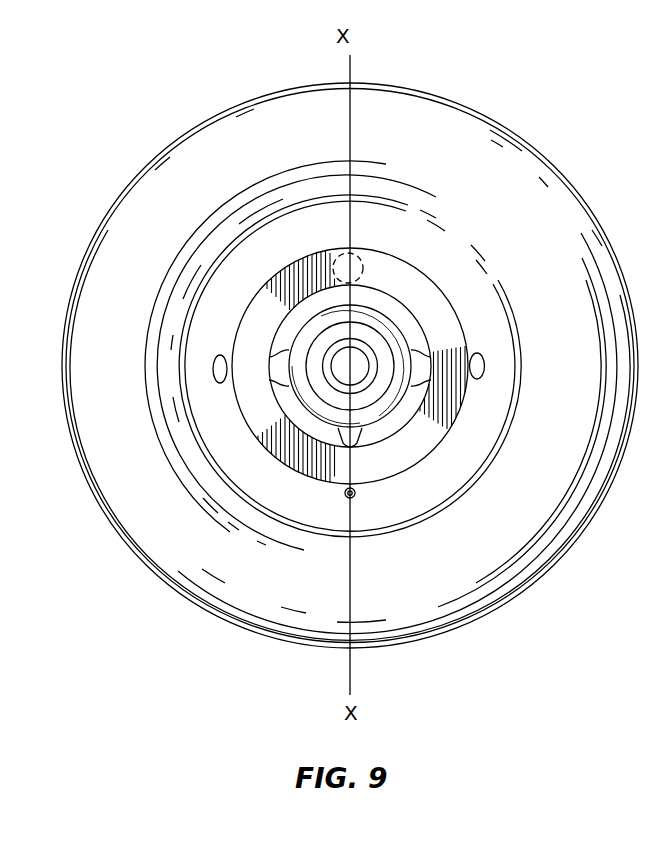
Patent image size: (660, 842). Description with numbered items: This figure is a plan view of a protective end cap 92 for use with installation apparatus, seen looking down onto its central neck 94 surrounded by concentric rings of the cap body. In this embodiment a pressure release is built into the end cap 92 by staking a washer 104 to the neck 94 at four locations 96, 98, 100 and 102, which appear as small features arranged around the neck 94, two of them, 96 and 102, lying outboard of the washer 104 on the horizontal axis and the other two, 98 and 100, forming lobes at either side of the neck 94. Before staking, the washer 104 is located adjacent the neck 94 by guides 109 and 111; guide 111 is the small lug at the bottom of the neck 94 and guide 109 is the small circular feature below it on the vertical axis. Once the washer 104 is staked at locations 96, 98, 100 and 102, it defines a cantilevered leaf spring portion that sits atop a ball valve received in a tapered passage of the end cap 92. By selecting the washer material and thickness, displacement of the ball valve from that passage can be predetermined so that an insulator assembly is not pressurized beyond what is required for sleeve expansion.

The end cap 92 is at (507, 158).
The neck 94 is at (370, 315).
The staking location 96 is at (220, 383).
The staking location 98 is at (283, 362).
The staking location 100 is at (422, 357).
The staking location 102 is at (484, 367).
The washer 104 is at (452, 425).
The guide 109 is at (356, 494).
The guide 111 is at (360, 438).